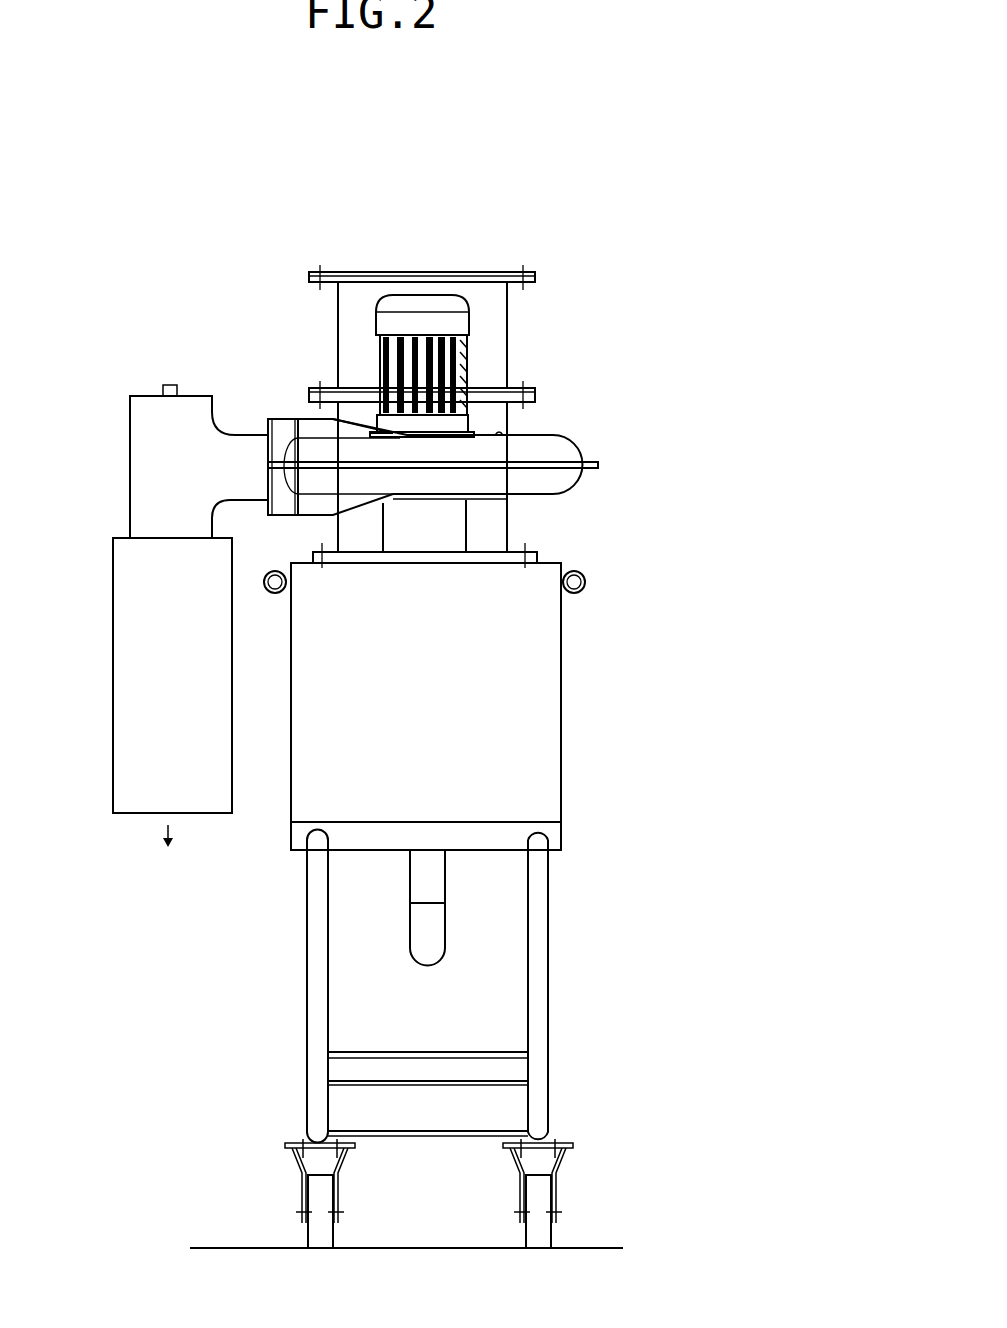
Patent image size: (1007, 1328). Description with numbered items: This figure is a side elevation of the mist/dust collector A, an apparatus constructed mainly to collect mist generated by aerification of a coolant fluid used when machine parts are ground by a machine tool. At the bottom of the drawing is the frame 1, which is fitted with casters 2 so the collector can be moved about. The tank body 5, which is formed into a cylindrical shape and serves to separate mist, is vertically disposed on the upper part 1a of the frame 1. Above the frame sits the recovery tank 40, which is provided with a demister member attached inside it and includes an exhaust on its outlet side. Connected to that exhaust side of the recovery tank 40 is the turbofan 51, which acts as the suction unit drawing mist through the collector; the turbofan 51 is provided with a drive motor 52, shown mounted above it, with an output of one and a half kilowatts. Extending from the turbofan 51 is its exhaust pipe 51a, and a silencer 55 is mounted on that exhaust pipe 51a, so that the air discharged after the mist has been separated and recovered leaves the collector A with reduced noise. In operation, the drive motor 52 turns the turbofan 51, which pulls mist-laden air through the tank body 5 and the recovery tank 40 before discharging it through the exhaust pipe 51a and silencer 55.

The mist/dust collector A is at (468, 256).
The tank body 5 is at (492, 283).
The drive motor 52 is at (470, 350).
The turbofan 51 is at (567, 445).
The exhaust pipe 51a is at (137, 435).
The silencer 55 is at (125, 620).
The recovery tank 40 is at (540, 638).
The upper part of frame 1a is at (543, 833).
The frame 1 is at (543, 950).
The casters 2 is at (563, 1175).